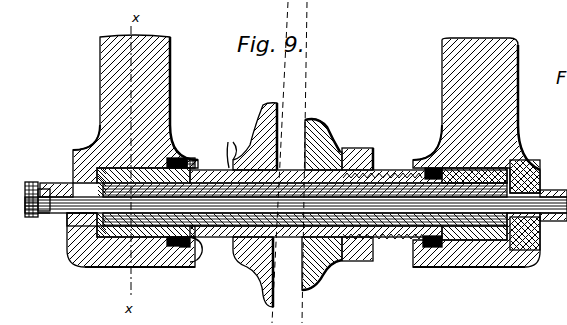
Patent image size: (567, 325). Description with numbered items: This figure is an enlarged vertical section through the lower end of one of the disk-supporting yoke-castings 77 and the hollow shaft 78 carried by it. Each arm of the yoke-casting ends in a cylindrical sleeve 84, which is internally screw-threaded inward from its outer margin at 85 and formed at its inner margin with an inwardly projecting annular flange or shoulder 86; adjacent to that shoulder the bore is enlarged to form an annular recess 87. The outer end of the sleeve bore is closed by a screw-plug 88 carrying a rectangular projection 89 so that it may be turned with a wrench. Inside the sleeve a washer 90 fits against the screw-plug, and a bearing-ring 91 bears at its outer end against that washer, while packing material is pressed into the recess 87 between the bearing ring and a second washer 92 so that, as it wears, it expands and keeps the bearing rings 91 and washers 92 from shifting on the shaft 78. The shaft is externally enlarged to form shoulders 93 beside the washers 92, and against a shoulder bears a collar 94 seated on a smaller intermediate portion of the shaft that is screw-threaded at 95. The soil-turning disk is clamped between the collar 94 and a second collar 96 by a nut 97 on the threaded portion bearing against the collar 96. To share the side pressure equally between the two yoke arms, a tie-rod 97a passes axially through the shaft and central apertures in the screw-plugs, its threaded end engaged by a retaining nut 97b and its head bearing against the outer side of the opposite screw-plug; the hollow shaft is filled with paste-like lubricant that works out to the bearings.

The yoke-casting 77 is at (135, 109).
The shaft 78 is at (383, 173).
The cylindrical sleeve 84 is at (106, 267).
The internal screw-thread 85 is at (78, 156).
The annular flange or shoulder 86 is at (194, 163).
The annular recess 87 is at (180, 157).
The screw-plug 88 is at (67, 218).
The rectangular projection 89 is at (62, 184).
The washer 90 is at (80, 248).
The bearing-ring 91 is at (150, 267).
The washer 92 is at (428, 172).
The shoulder 93 is at (228, 160).
The collar 94 is at (270, 104).
The screw-threaded portion 95 is at (394, 240).
The collar 96 is at (326, 128).
The nut 97 is at (358, 195).
The tie-rod 97a is at (303, 247).
The retaining nut 97b is at (43, 196).